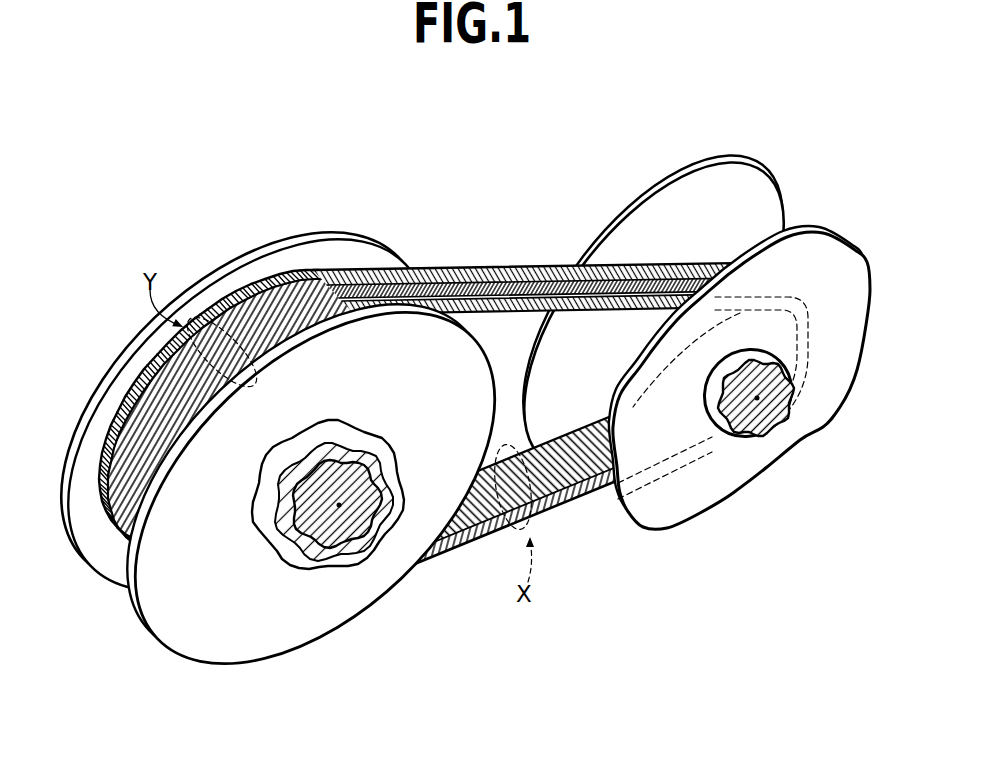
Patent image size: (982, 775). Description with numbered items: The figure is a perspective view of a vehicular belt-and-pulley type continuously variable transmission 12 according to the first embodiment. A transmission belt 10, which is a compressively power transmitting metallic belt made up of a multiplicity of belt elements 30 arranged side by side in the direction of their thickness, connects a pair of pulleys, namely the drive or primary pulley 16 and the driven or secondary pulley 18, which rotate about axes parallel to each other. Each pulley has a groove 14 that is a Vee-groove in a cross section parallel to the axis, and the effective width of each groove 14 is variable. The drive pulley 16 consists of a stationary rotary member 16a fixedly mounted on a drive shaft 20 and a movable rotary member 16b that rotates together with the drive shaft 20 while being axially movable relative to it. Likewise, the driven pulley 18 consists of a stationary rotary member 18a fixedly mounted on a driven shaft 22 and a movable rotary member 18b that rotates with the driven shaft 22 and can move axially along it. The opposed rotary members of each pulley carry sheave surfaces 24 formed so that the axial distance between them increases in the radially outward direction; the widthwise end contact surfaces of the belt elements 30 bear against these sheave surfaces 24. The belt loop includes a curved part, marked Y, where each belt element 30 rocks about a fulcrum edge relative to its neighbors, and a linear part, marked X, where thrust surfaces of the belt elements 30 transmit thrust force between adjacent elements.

The transmission belt 10 is at (555, 560).
The vehicular belt-and-pulley type continuously variable transmission 12 is at (506, 117).
The groove 14 is at (469, 415).
The drive pulley 16 is at (427, 342).
The stationary rotary member 16a is at (708, 500).
The movable rotary member 16b is at (672, 183).
The driven pulley 18 is at (246, 411).
The stationary rotary member 18a is at (90, 407).
The movable rotary member 18b is at (290, 627).
The drive shaft 20 is at (705, 421).
The driven shaft 22 is at (347, 523).
The sheave surface 24 is at (757, 192).
The belt element 30 is at (470, 573).